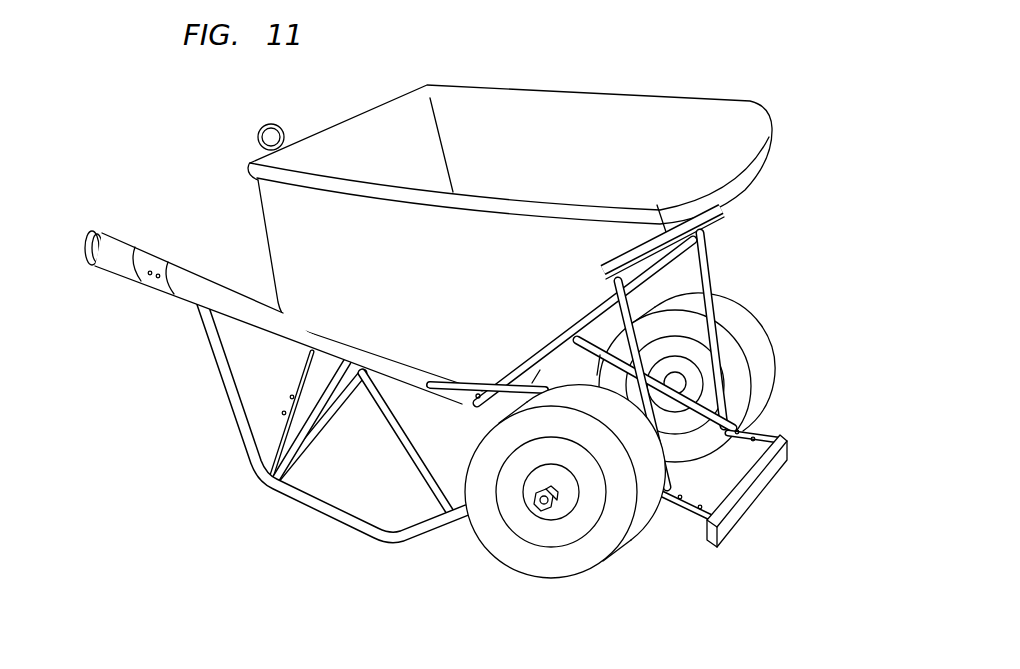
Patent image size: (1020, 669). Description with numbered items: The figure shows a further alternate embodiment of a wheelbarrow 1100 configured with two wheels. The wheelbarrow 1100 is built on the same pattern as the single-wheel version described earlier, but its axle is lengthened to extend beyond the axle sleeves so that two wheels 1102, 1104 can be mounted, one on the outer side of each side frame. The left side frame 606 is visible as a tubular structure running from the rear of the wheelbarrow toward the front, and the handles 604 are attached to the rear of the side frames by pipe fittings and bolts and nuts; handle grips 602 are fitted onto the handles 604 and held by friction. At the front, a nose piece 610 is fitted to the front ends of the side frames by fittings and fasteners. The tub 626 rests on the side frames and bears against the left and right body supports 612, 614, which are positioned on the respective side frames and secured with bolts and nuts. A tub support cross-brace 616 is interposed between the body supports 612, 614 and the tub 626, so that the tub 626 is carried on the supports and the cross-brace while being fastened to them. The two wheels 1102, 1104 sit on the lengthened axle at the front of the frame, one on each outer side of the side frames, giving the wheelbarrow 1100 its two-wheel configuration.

The wheelbarrow 1100 is at (690, 78).
The handle grip 602 is at (270, 124).
The handle 604 is at (153, 260).
The left side frame 606 is at (240, 417).
The nose piece 610 is at (783, 462).
The left body support 612 is at (603, 320).
The right body support 614 is at (714, 278).
The tub support cross-brace 616 is at (668, 237).
The tub 626 is at (766, 112).
The wheel 1102 is at (537, 579).
The wheel 1104 is at (767, 344).